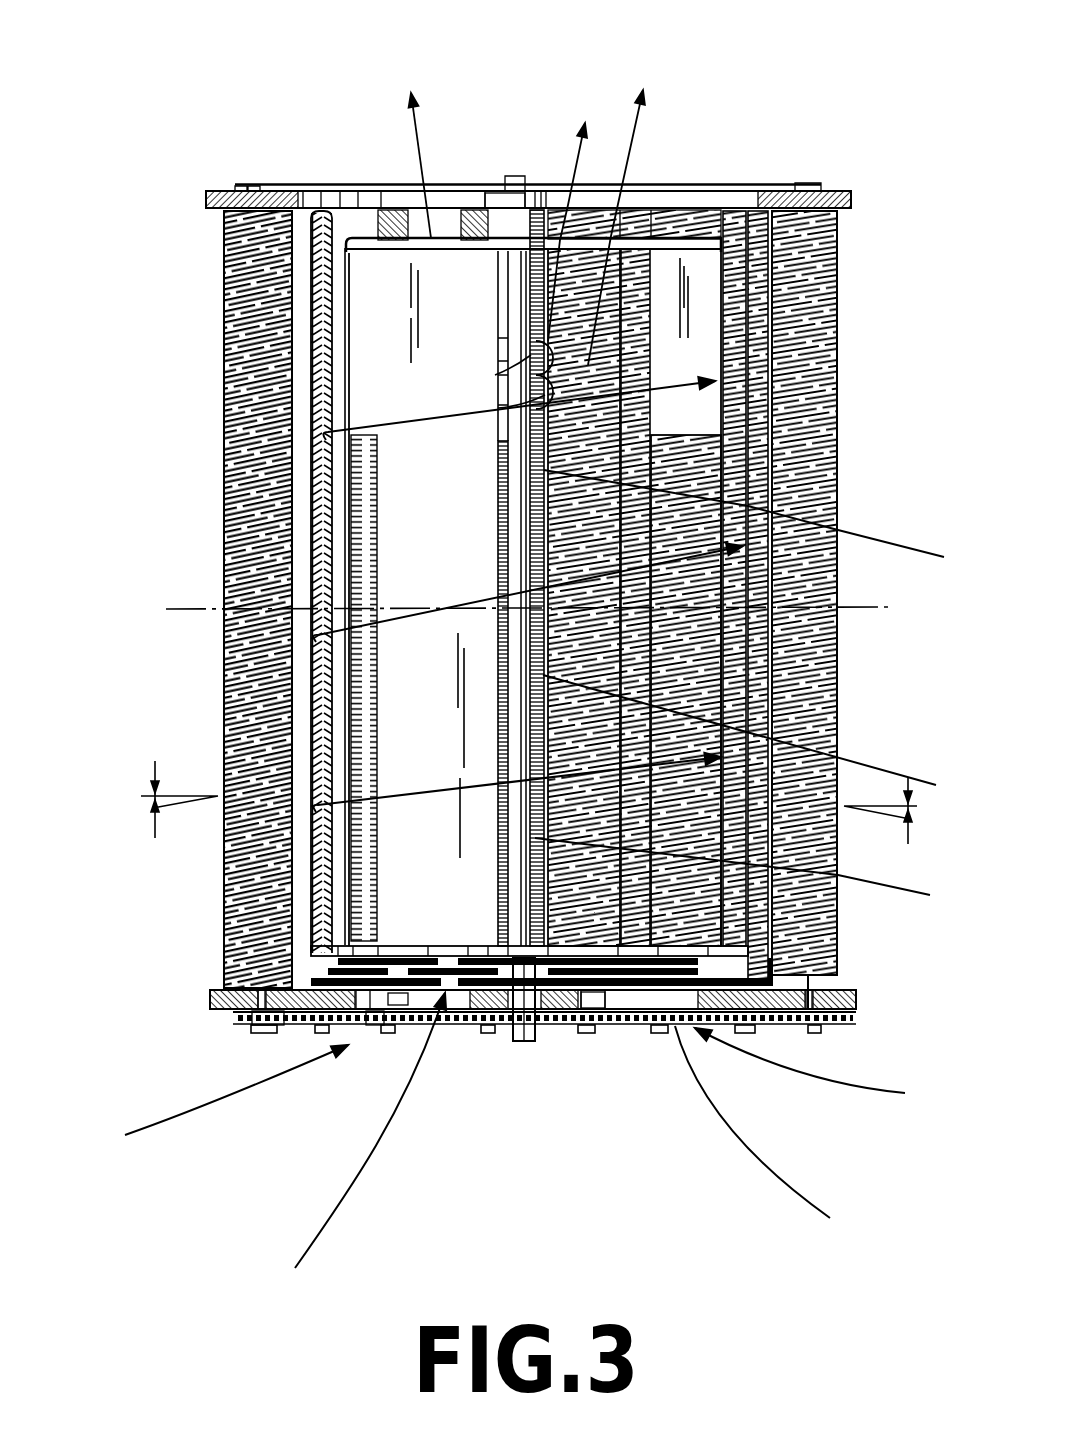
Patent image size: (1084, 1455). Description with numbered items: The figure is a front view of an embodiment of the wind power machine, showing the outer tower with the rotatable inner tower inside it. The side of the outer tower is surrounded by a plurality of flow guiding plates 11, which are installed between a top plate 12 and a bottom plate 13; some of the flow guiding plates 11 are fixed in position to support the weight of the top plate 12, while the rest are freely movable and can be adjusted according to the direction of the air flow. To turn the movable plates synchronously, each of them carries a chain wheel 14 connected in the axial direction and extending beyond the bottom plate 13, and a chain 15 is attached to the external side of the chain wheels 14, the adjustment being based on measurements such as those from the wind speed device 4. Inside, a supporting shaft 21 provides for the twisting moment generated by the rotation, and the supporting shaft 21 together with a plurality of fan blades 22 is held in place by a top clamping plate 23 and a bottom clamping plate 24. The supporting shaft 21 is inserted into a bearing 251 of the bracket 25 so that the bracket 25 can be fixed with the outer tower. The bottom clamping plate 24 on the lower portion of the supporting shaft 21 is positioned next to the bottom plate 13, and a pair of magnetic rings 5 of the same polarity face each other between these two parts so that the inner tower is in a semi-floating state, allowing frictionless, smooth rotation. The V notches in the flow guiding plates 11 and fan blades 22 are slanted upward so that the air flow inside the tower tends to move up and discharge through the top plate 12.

The top plate 12 is at (205, 197).
The bottom plate 13 is at (836, 987).
The flow guiding plates 11 is at (235, 302).
The fan blades 22 is at (355, 363).
The supporting shaft 21 is at (497, 440).
The top clamping plate 23 is at (658, 236).
The bracket 25 is at (533, 203).
The bearing 251 is at (487, 193).
The bottom clamping plate 24 is at (733, 947).
The chain 15 is at (367, 1022).
The chain wheel 14 is at (275, 1088).
The magnetic rings 5 is at (620, 1012).
The wind speed device 4 is at (520, 624).